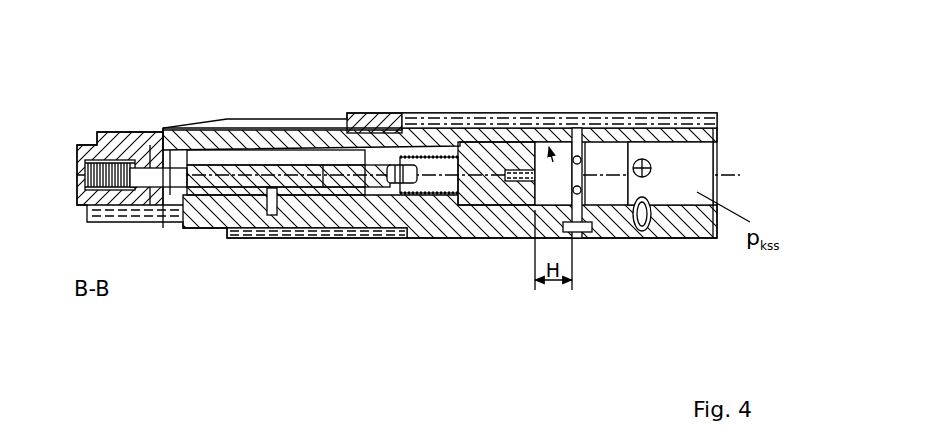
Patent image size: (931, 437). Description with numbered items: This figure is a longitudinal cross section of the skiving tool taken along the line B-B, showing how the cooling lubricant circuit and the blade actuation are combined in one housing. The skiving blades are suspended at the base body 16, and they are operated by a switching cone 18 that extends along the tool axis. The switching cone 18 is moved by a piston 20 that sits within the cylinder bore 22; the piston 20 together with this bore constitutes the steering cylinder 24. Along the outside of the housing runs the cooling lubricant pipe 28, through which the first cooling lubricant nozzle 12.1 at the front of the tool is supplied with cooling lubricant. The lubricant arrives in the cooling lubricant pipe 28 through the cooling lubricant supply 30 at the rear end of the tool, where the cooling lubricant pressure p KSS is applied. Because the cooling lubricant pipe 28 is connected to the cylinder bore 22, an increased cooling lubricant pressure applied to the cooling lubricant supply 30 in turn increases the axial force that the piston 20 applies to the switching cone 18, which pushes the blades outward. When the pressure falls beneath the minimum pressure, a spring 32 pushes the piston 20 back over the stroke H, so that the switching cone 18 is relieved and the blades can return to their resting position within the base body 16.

The first cooling lubricant nozzle 12.1 is at (358, 115).
The base body 16 is at (680, 98).
The switching cone 18 is at (338, 195).
The piston 20 is at (490, 203).
The cylinder bore 22 is at (564, 163).
The steering cylinder 24 is at (538, 101).
The cooling lubricant pipe 28 is at (493, 120).
The cooling lubricant supply 30 is at (724, 155).
The spring 32 is at (427, 193).